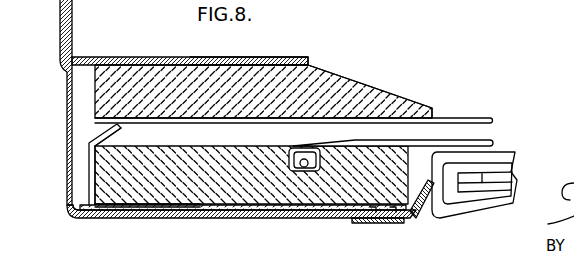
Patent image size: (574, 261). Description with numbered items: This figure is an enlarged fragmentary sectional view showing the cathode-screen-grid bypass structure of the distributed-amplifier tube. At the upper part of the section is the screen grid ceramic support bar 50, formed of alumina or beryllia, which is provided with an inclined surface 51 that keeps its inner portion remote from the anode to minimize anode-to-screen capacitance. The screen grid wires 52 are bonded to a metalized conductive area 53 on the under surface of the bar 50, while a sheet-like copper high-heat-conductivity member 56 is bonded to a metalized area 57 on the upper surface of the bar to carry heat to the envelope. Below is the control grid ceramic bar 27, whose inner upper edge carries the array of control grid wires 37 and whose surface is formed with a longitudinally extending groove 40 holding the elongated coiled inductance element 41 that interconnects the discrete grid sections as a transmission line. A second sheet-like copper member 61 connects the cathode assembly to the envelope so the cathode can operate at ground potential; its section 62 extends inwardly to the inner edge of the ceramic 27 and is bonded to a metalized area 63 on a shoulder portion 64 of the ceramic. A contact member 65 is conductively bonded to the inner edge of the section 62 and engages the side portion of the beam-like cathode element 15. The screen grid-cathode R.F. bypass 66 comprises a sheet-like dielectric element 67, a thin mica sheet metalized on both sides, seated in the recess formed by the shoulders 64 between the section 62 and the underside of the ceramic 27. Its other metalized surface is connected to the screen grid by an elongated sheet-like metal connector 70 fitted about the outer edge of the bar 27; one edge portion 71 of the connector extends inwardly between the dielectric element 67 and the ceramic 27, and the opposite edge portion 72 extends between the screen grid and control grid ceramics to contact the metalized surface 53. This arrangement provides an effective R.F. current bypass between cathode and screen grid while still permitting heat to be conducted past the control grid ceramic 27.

The cathode element 15 is at (520, 178).
The ceramic support bar 27 is at (335, 188).
The grid wires 37 is at (488, 140).
The groove 40 is at (287, 157).
The inductance element 41 is at (304, 167).
The ceramic support bar 50 is at (179, 82).
The inclined surface 51 is at (349, 79).
The grid wires 52 is at (466, 118).
The metalized conductive area 53 is at (406, 103).
The high-heat-conductivity member 56 is at (131, 58).
The metalized area 57 is at (273, 62).
The high-heat-conductivity member 61 is at (63, 99).
The section 62 is at (222, 219).
The metalized area 63 is at (373, 213).
The shoulder portion 64 is at (394, 213).
The contact member 65 is at (414, 205).
The screen grid-cathode R.F. bypass 66 is at (80, 200).
The dielectric element 67 is at (158, 211).
The metal connector 70 is at (88, 157).
The edge portion 71 is at (110, 208).
The edge portion 72 is at (118, 128).